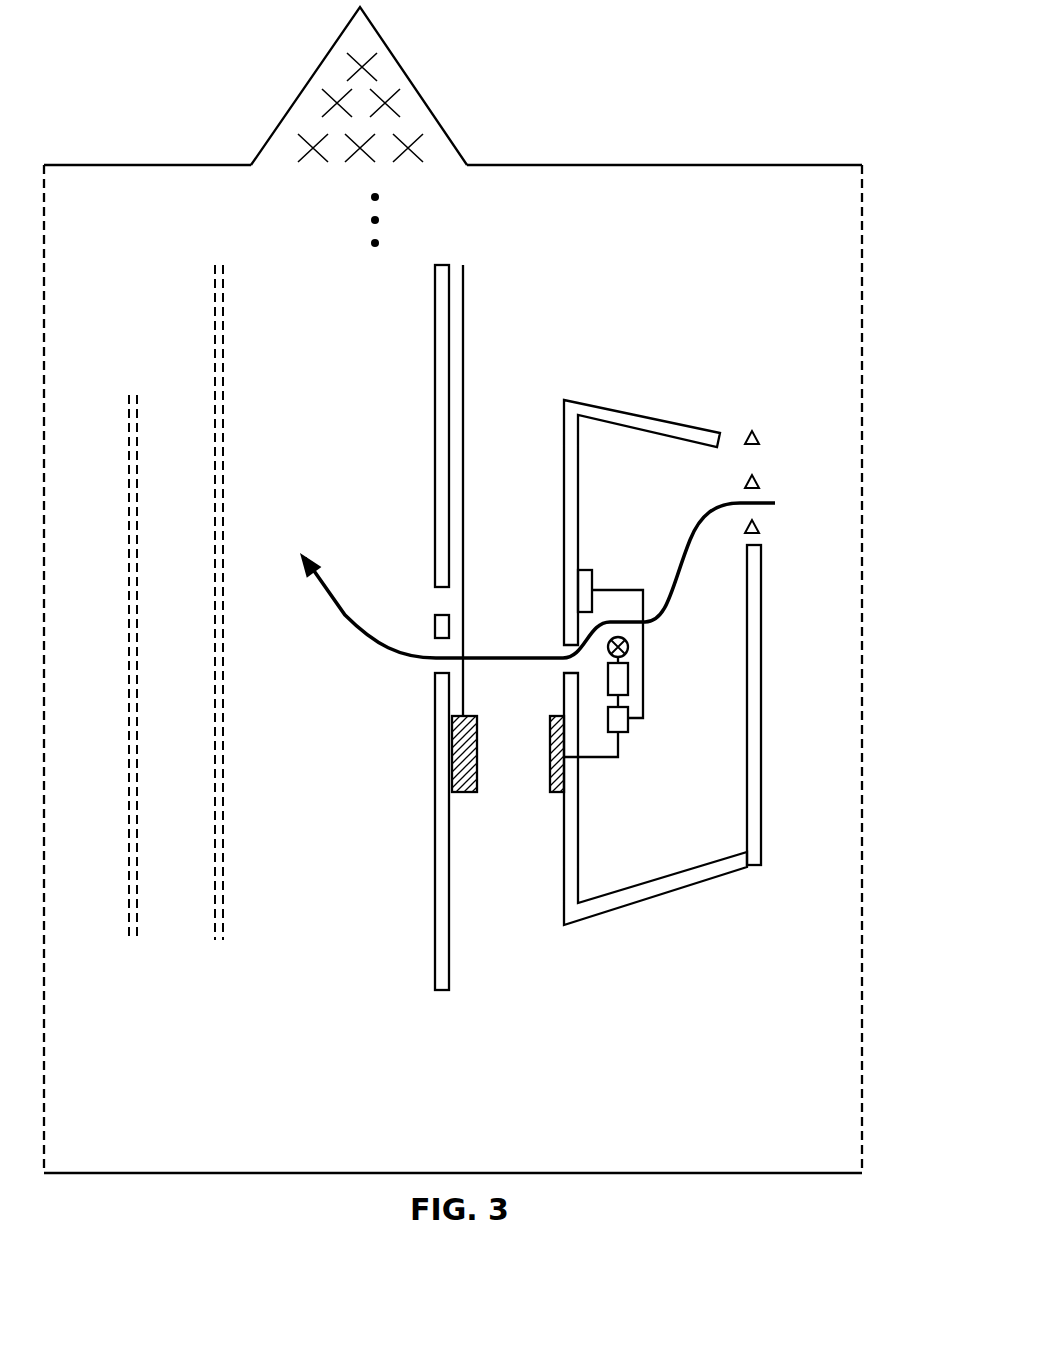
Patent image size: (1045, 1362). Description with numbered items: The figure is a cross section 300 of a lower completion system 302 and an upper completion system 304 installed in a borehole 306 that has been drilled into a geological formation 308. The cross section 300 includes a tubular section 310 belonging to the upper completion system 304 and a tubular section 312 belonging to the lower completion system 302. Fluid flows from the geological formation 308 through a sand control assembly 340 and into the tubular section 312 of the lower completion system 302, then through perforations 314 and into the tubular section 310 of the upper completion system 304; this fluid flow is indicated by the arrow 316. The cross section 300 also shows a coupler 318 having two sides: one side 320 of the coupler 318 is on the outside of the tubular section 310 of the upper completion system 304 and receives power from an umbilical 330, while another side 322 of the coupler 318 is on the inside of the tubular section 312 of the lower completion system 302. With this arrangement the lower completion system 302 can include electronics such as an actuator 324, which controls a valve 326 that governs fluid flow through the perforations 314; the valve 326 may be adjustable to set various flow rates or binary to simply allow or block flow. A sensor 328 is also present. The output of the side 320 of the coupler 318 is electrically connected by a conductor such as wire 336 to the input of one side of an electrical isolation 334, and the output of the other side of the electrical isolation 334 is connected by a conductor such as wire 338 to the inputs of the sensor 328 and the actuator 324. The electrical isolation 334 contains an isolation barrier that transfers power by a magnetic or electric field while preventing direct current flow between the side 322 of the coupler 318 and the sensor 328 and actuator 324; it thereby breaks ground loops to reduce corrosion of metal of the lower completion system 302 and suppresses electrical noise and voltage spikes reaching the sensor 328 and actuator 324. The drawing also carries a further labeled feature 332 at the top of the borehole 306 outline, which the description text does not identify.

The cross section 300 is at (162, 62).
The lower completion system 302 is at (773, 570).
The upper completion system 304 is at (450, 1053).
The borehole 306 is at (660, 190).
The geological formation 308 is at (928, 728).
The tubular section of the upper completion system 310 is at (443, 265).
The tubular section of the lower completion system 312 is at (647, 415).
The perforations 314 is at (445, 648).
The arrow 316 is at (350, 625).
The coupler 318 is at (550, 866).
The side of the coupler 320 is at (478, 765).
The another side of the coupler 322 is at (548, 755).
The actuator 324 is at (628, 675).
The valve 326 is at (630, 647).
The sensor 328 is at (592, 585).
The umbilical 330 is at (475, 305).
The exhaust port 332 is at (217, 165).
The electrical isolation 334 is at (628, 728).
The wire 336 is at (592, 757).
The wire 338 is at (628, 662).
The sand control assembly 340 is at (767, 428).